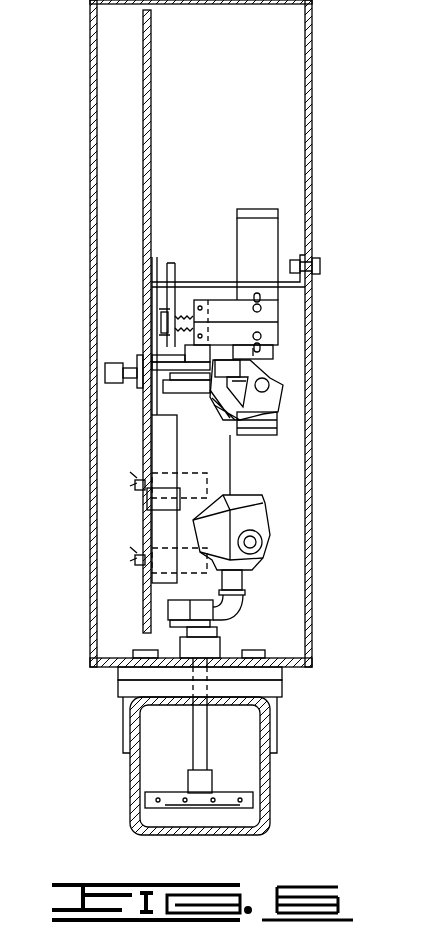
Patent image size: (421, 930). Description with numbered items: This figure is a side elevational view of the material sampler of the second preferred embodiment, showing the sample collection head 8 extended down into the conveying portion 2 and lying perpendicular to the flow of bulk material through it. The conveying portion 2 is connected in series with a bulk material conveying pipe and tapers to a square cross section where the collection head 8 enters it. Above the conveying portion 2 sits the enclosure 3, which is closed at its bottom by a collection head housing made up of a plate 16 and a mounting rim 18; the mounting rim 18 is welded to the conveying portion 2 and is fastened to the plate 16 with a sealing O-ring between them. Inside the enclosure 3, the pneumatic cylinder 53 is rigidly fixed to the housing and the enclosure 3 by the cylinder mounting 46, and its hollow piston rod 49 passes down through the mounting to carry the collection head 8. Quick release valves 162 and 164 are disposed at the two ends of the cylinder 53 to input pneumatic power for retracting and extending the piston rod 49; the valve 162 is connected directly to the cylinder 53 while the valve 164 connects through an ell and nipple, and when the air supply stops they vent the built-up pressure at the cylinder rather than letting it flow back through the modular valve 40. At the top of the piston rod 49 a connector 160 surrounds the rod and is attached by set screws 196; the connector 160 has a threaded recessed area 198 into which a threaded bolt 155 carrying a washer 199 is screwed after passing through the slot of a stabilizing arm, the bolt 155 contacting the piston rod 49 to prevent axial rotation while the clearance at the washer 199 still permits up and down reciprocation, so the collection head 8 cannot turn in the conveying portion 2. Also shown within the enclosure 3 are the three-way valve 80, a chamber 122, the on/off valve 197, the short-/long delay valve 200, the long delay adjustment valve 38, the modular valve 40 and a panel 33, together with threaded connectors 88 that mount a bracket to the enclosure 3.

The conveying portion 2 is at (131, 775).
The enclosure 3 is at (312, 97).
The sample collection head 8 is at (167, 792).
The plate 16 is at (282, 673).
The mounting rim 18 is at (282, 688).
The panel 33 is at (143, 65).
The long delay adjustment valve 38 is at (110, 378).
The modular valve 40 is at (137, 361).
The cylinder mounting 46 is at (222, 637).
The hollow piston rod 49 is at (200, 748).
The cylinder 53 is at (225, 462).
The three-way valve 80 is at (290, 288).
The threaded connectors 88 is at (320, 265).
The chamber 122 is at (160, 440).
The threaded bolt 155 is at (162, 322).
The connector 160 is at (237, 319).
The quick release valve 162 is at (285, 400).
The quick release valve 164 is at (265, 545).
The set screws 196 is at (197, 308).
The on/off valve 197 is at (134, 570).
The threaded recessed area 198 is at (245, 331).
The washer 199 is at (163, 311).
The short-/long delay valve 200 is at (134, 492).